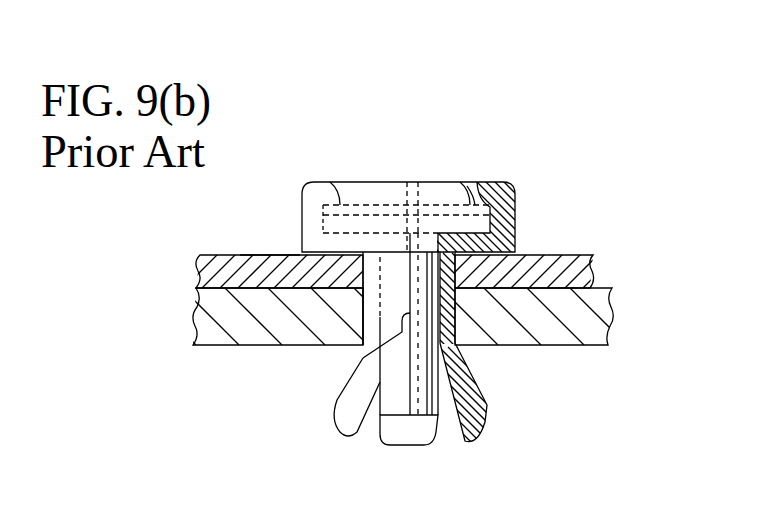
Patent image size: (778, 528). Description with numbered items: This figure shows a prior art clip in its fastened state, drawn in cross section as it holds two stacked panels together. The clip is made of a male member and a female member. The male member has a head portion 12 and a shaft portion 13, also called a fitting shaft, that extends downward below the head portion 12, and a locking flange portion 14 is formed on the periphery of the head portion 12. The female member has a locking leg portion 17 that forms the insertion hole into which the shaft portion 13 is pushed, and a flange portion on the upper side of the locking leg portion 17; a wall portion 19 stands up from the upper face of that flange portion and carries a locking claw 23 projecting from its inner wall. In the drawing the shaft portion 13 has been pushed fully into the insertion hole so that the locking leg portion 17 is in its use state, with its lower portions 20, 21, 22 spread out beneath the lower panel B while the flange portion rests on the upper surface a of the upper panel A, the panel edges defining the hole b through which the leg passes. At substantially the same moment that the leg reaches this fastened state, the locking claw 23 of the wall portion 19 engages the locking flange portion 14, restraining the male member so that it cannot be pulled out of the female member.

The head portion 12 is at (432, 181).
The shaft portion 13 is at (412, 445).
The locking flange portion 14 is at (513, 221).
The locking leg portion 17 is at (460, 327).
The wall portion 19 is at (300, 206).
The engaging portion 20 is at (480, 385).
The leg 21 is at (360, 349).
The claw 22 is at (345, 412).
The locking claw 23 is at (480, 181).
The upper panel A is at (587, 270).
The lower panel B is at (597, 318).
The panel surface a is at (268, 254).
The mounting hole b is at (350, 309).